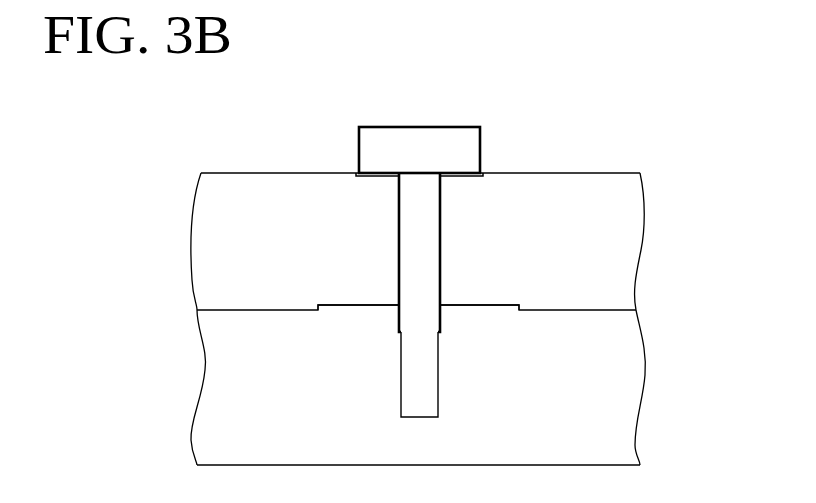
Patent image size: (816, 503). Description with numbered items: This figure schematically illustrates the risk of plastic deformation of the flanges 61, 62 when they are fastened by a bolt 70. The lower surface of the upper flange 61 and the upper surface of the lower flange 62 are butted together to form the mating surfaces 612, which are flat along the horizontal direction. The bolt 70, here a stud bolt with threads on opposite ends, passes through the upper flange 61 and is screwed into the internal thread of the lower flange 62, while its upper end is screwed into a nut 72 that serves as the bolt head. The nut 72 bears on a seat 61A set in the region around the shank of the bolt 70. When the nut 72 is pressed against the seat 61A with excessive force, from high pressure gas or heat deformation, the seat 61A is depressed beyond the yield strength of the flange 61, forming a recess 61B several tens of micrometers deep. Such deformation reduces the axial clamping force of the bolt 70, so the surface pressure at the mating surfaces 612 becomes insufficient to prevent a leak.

The flange 61 is at (640, 248).
The flange 62 is at (640, 393).
The mating surfaces 612 is at (547, 308).
The bolt 70 is at (466, 230).
The nut 72 is at (372, 127).
The seat 61A is at (455, 172).
The recess 61B is at (372, 172).